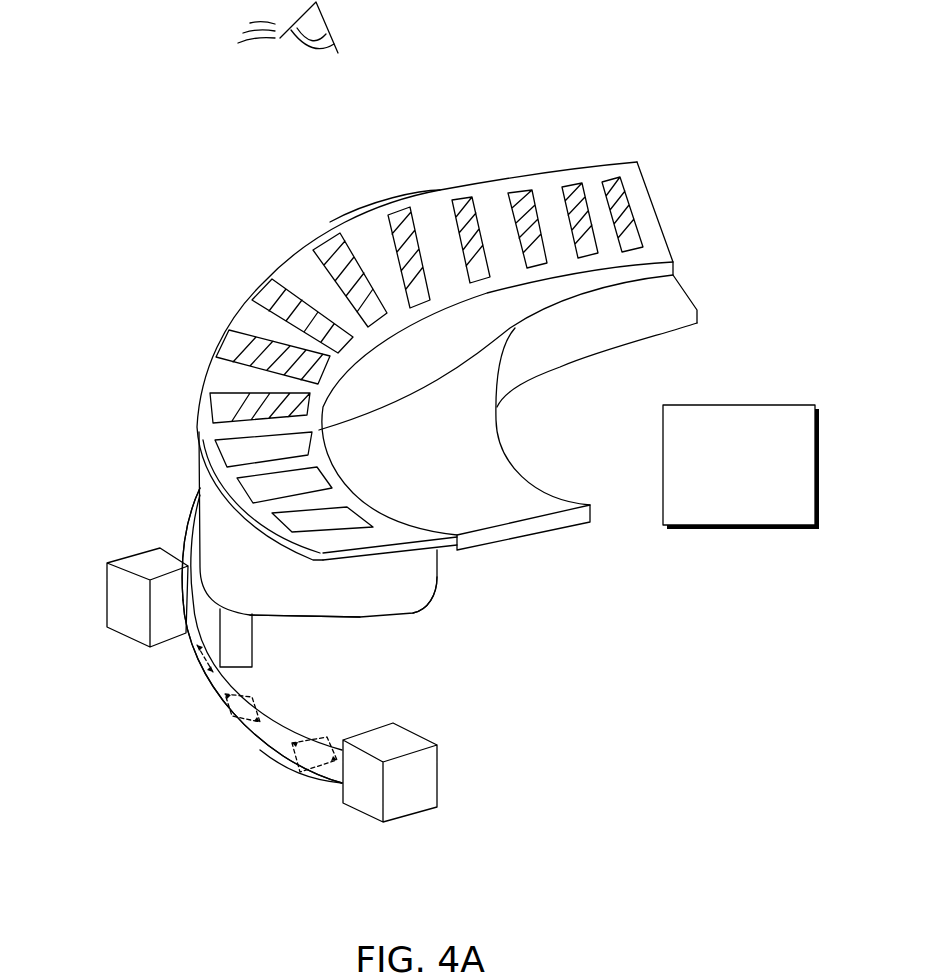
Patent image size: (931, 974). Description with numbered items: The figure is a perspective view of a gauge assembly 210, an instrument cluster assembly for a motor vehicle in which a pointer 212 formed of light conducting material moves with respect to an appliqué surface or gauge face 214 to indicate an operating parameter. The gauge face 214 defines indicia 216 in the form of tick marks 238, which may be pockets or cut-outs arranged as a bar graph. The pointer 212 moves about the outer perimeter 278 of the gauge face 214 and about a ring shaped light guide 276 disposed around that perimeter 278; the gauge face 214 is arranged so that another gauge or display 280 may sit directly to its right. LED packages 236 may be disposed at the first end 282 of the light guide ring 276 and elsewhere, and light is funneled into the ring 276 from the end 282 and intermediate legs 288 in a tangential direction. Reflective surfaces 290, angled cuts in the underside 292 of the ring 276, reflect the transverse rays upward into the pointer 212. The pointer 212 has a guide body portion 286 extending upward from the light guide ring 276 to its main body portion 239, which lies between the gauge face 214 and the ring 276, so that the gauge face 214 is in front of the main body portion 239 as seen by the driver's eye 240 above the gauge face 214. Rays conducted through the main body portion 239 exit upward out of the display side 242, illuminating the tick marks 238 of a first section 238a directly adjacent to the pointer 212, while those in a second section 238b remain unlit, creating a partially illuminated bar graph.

The gauge assembly 210 is at (188, 138).
The pointer 212 is at (396, 596).
The gauge face 214 is at (577, 323).
The indicia 216 is at (293, 237).
The LED packages 236 is at (108, 562).
The tick marks 238 is at (316, 247).
The first section 238a is at (390, 412).
The second section 238b is at (462, 372).
The main body portion 239 is at (413, 578).
The driver's eye 240 is at (313, 45).
The display side 242 is at (378, 600).
The light guide ring 276 is at (257, 720).
The outer perimeter 278 is at (356, 212).
The gauge or display 280 is at (721, 477).
The first end 282 is at (330, 800).
The guide body portion 286 is at (230, 627).
The intermediate legs 288 is at (182, 543).
The reflective surfaces 290 is at (197, 658).
The underside 292 is at (297, 762).